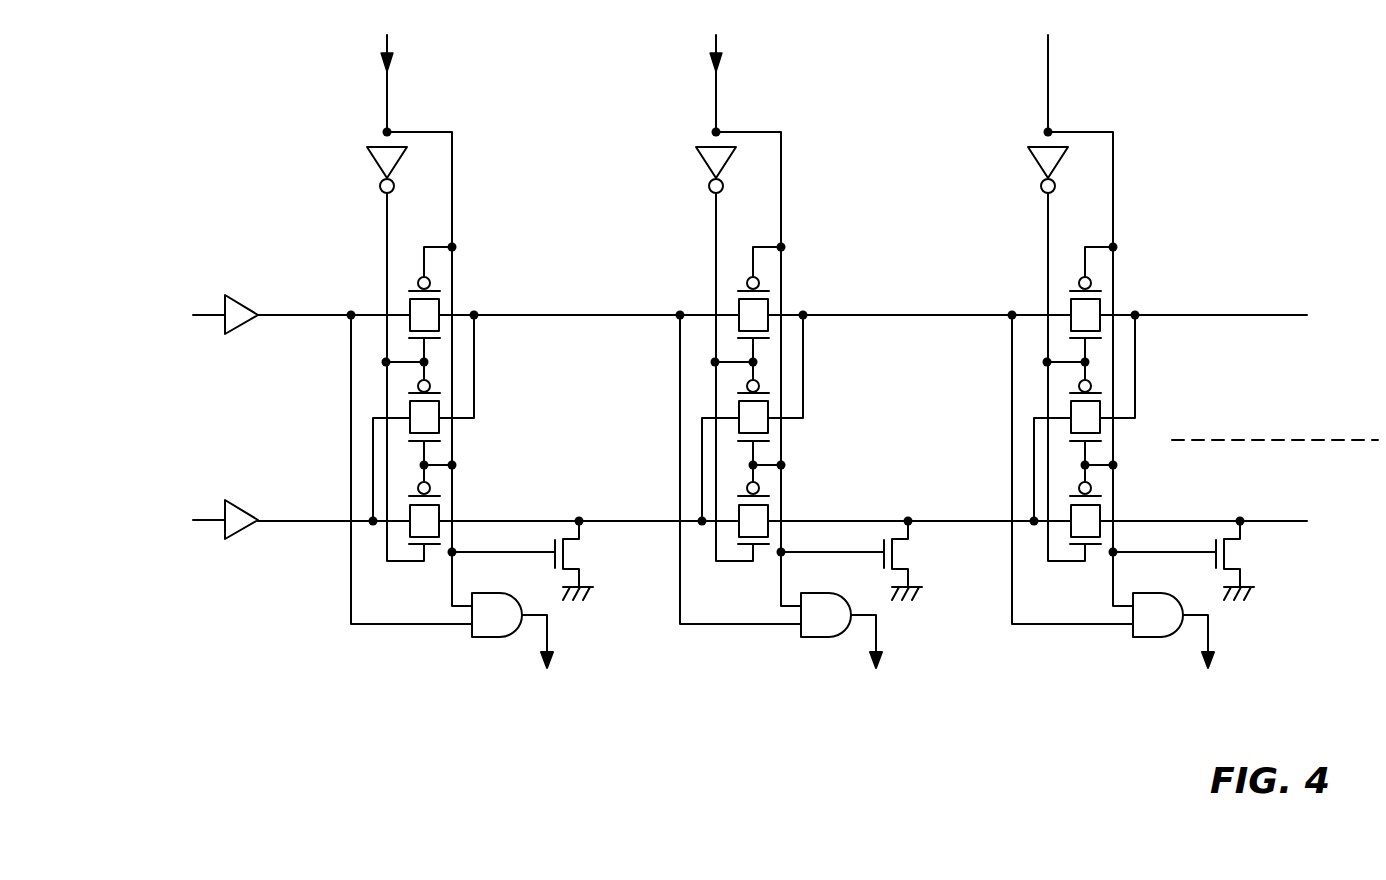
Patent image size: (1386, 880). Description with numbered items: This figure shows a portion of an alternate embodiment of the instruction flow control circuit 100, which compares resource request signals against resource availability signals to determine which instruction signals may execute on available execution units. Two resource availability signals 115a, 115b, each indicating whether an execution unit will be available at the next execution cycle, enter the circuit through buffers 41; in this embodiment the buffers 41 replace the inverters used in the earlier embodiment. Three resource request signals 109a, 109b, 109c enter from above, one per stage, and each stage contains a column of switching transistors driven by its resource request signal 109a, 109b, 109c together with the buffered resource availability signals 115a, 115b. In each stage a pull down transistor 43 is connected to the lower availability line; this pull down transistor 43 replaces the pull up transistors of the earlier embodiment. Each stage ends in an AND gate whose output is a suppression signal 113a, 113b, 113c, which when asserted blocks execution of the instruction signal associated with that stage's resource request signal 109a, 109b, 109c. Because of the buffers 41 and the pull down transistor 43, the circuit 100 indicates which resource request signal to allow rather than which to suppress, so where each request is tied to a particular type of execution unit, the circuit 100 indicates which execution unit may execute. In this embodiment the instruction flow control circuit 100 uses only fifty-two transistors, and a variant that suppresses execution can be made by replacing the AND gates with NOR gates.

The instruction flow control circuit 100 is at (312, 143).
The buffer 41 is at (243, 337).
The pull down transistor 43 is at (581, 545).
The resource request signal 109a is at (389, 75).
The resource request signal 109b is at (758, 83).
The resource request signal 109c is at (1093, 83).
The suppression signal 113a is at (550, 622).
The suppression signal 113b is at (885, 630).
The suppression signal 113c is at (1217, 630).
The resource availability signal 115a is at (292, 317).
The resource availability signal 115b is at (340, 523).